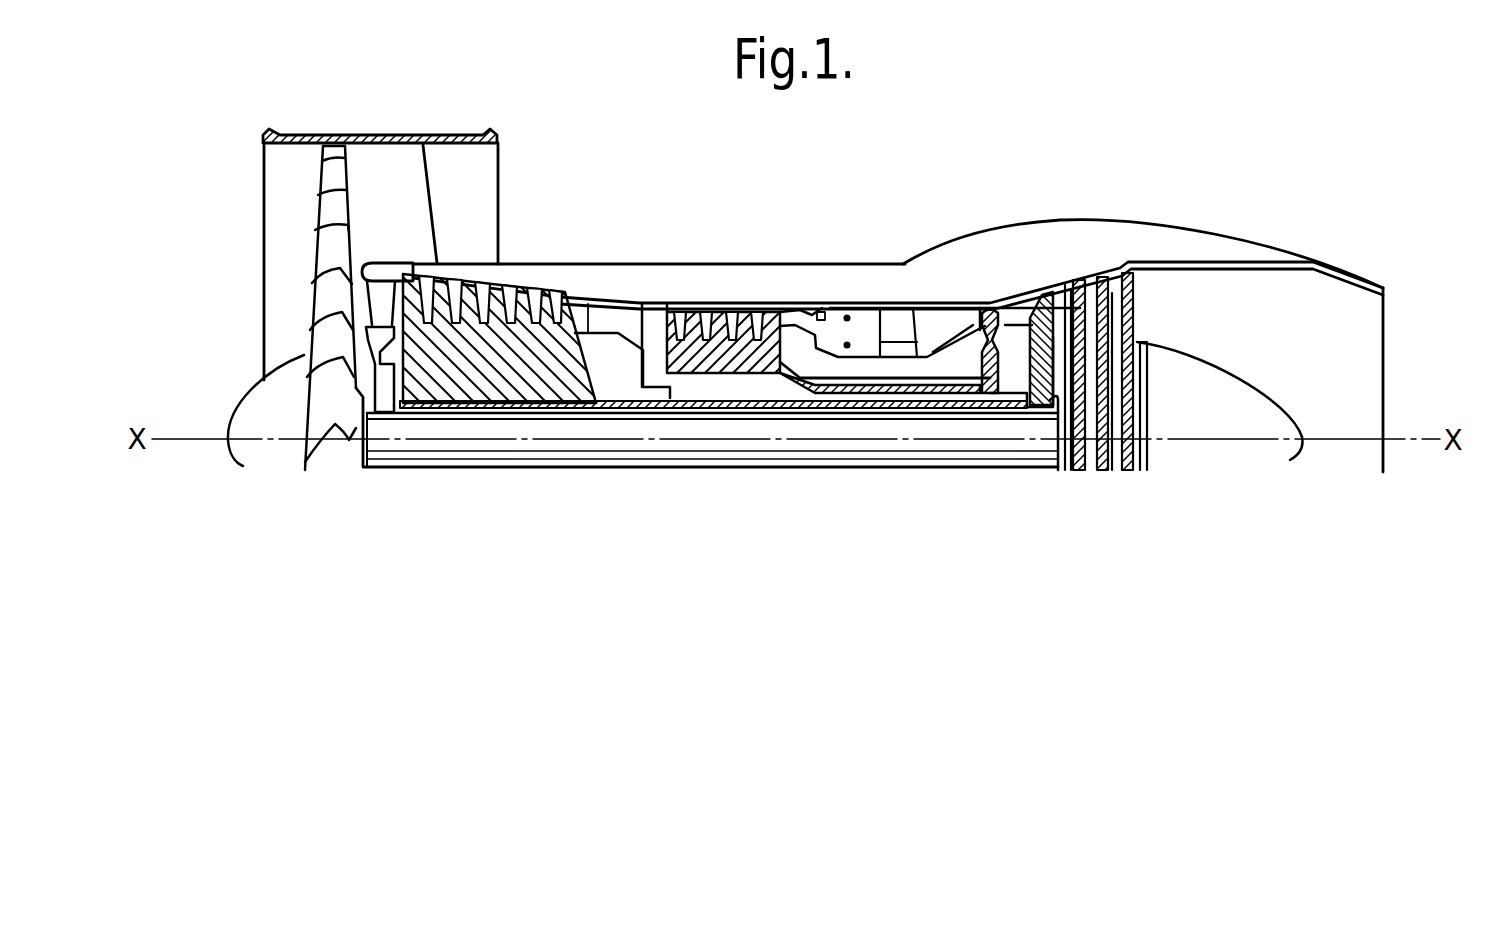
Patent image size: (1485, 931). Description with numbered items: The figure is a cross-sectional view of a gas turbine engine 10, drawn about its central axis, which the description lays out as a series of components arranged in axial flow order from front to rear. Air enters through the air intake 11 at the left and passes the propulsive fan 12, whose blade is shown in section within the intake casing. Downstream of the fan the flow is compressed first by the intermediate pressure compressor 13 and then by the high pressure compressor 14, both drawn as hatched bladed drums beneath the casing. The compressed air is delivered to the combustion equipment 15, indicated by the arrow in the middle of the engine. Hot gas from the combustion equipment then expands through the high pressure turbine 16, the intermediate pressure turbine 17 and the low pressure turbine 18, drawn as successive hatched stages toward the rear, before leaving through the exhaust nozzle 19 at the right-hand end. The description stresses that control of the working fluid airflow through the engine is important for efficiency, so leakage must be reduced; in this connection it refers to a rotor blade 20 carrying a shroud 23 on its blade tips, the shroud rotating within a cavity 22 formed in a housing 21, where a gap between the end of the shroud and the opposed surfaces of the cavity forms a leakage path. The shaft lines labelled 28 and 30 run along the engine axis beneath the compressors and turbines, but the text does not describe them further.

The gas turbine engine 10 is at (665, 215).
The air intake 11 is at (250, 272).
The propulsive fan 12 is at (336, 177).
The intermediate pressure compressor 13 is at (487, 360).
The high pressure compressor 14 is at (715, 310).
The combustion equipment 15 is at (903, 290).
The high pressure turbine 16 is at (992, 308).
The intermediate pressure turbine 17 is at (1042, 296).
The low pressure turbine 18 is at (1122, 314).
The exhaust nozzle 19 is at (1358, 384).
The rotor blade 20 is at (816, 312).
The housing 21 is at (897, 362).
The cavity 22 is at (862, 358).
The shroud 23 is at (848, 310).
The shaft casing 28 is at (627, 405).
The shaft 30 is at (437, 463).